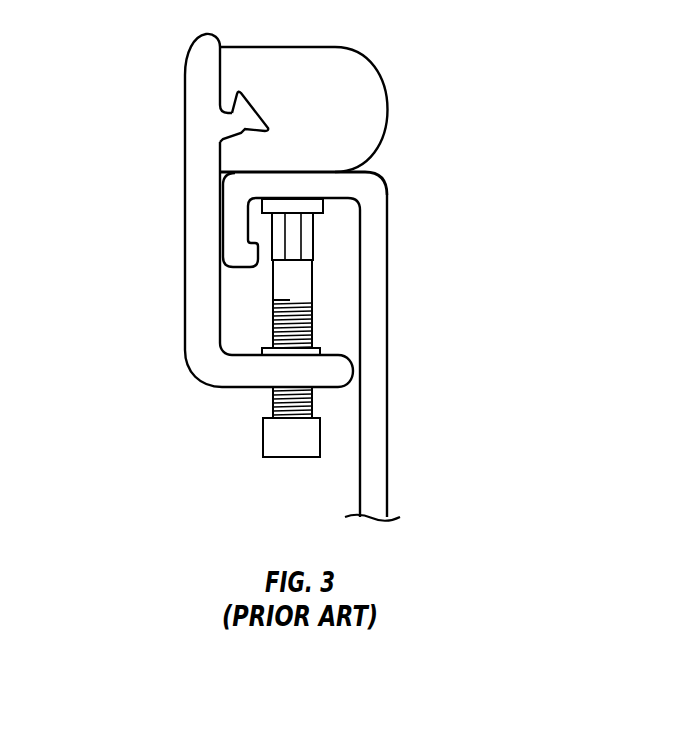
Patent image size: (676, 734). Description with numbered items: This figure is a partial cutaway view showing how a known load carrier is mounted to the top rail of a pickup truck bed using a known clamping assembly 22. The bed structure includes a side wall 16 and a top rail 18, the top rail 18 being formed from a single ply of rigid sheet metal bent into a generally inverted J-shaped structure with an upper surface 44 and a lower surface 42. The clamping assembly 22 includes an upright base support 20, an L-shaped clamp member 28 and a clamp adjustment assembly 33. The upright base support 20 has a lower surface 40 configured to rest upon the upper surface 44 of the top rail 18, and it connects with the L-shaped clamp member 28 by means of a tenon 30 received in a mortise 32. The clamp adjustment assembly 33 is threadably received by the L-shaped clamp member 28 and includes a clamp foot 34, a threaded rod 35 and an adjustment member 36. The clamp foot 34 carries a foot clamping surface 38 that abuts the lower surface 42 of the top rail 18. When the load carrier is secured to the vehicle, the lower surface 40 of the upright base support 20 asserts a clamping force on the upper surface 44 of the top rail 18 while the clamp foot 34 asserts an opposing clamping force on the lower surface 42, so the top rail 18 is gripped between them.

The side wall 16 is at (372, 362).
The top rail 18 is at (315, 188).
The upright base support 20 is at (370, 92).
The clamping assembly 22 is at (248, 235).
The L-shaped clamp member 28 is at (197, 253).
The tenon 30 is at (240, 121).
The mortise 32 is at (252, 100).
The clamp adjustment assembly 33 is at (270, 320).
The clamp foot 34 is at (293, 228).
The threaded rod 35 is at (293, 275).
The adjustment member 36 is at (277, 437).
The foot clamping surface 38 is at (320, 214).
The lower surface 40 is at (313, 168).
The lower surface 42 is at (312, 203).
The upper surface 44 is at (336, 171).